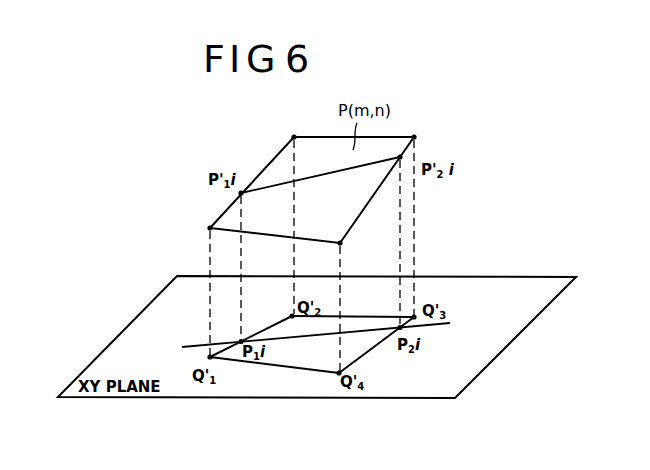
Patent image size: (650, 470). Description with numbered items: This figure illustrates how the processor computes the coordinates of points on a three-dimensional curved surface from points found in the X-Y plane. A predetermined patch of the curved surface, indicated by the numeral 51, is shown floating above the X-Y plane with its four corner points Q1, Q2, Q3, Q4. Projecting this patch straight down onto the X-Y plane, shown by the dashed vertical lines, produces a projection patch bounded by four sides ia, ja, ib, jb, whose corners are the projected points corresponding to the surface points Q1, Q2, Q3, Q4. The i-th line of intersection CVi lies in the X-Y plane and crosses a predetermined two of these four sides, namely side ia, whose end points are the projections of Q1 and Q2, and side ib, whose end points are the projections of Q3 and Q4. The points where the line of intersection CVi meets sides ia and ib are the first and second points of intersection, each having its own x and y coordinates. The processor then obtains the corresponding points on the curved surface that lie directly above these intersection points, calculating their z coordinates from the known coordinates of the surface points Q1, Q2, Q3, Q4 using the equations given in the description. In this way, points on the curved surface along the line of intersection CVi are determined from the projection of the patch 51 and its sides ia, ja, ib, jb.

The surface patch P(m,n) 51 is at (395, 146).
The point on three-dimensional curved surface Q1 is at (198, 230).
The point on three-dimensional curved surface Q2 is at (290, 129).
The point on three-dimensional curved surface Q3 is at (425, 140).
The point on three-dimensional curved surface Q4 is at (352, 251).
The side of projection patch ia is at (278, 325).
The side of projection patch ja is at (349, 317).
The side of projection patch ib is at (372, 349).
The side of projection patch jb is at (288, 369).
The i-th line of intersection CVi is at (437, 325).